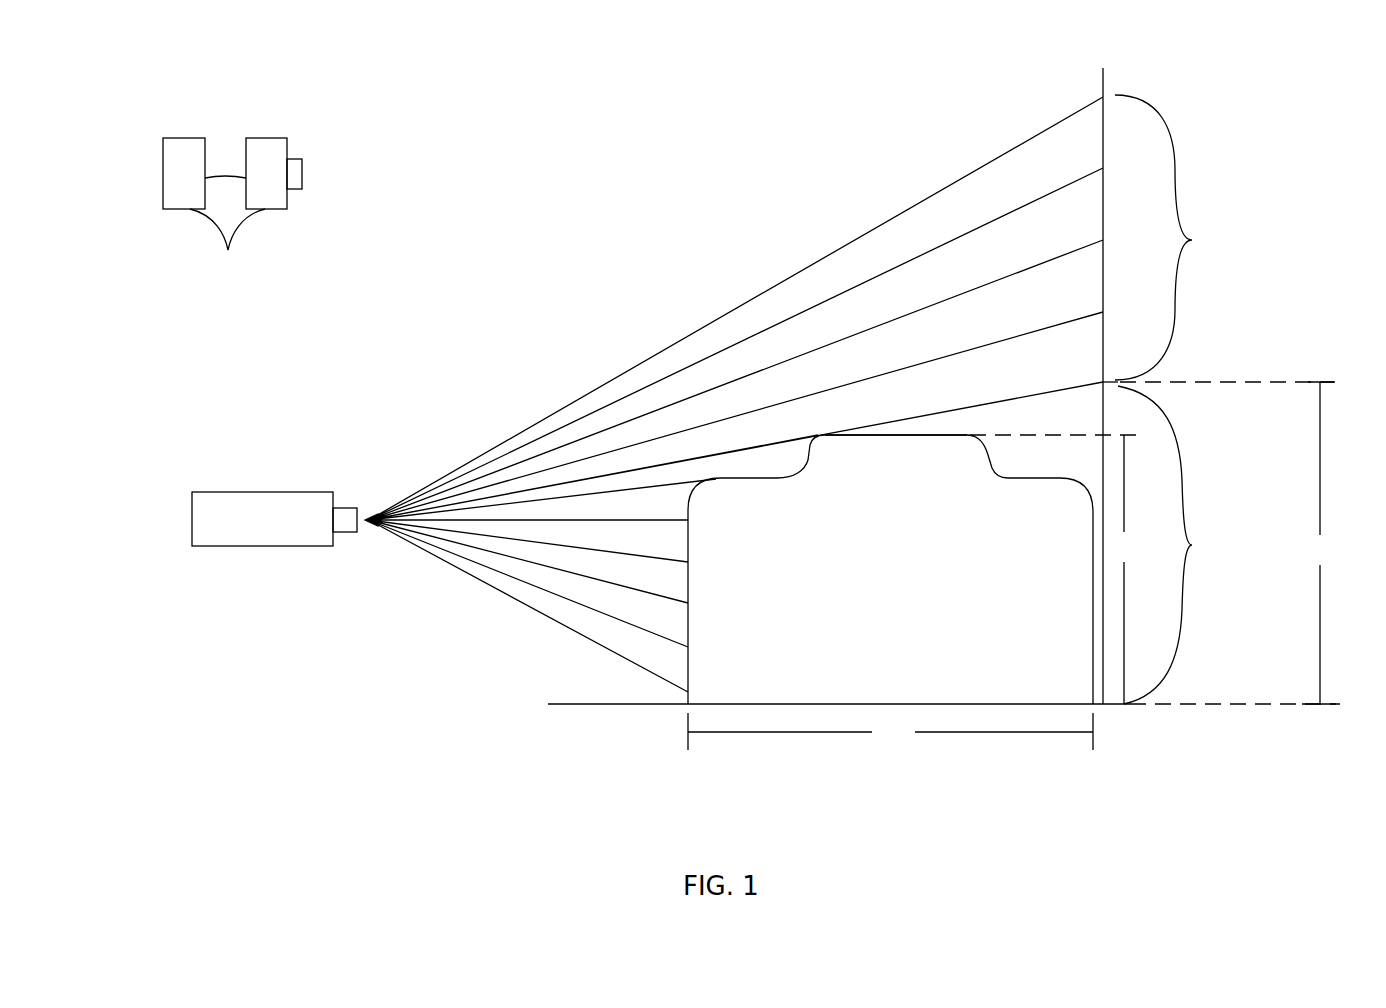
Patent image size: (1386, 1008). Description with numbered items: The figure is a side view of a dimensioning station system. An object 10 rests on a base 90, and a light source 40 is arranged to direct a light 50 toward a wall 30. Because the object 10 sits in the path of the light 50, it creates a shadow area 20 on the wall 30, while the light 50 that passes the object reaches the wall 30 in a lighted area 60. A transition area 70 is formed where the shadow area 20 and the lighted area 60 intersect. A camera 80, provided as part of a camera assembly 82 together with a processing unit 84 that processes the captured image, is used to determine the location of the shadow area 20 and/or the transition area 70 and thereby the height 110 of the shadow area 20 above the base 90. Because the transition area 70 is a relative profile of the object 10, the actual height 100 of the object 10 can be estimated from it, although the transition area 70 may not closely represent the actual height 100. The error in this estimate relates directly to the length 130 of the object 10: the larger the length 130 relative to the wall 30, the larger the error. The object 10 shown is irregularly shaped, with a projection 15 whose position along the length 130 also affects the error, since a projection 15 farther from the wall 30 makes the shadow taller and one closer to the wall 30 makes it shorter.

The object 10 is at (1000, 475).
The projection 15 is at (943, 435).
The shadow area 20 is at (1173, 545).
The wall 30 is at (1105, 82).
The light source 40 is at (252, 492).
The light 50 is at (601, 370).
The lighted area 60 is at (1171, 237).
The transition area 70 is at (1118, 382).
The camera 80 is at (270, 138).
The camera assembly 82 is at (227, 245).
The processing unit 84 is at (184, 173).
The base 90 is at (585, 705).
The actual height 100 is at (1133, 569).
The height of the shadow area 110 is at (1323, 543).
The length 130 is at (890, 731).